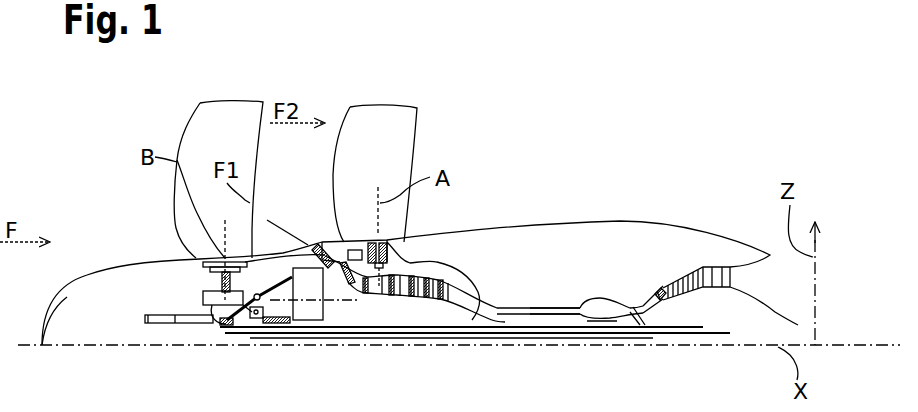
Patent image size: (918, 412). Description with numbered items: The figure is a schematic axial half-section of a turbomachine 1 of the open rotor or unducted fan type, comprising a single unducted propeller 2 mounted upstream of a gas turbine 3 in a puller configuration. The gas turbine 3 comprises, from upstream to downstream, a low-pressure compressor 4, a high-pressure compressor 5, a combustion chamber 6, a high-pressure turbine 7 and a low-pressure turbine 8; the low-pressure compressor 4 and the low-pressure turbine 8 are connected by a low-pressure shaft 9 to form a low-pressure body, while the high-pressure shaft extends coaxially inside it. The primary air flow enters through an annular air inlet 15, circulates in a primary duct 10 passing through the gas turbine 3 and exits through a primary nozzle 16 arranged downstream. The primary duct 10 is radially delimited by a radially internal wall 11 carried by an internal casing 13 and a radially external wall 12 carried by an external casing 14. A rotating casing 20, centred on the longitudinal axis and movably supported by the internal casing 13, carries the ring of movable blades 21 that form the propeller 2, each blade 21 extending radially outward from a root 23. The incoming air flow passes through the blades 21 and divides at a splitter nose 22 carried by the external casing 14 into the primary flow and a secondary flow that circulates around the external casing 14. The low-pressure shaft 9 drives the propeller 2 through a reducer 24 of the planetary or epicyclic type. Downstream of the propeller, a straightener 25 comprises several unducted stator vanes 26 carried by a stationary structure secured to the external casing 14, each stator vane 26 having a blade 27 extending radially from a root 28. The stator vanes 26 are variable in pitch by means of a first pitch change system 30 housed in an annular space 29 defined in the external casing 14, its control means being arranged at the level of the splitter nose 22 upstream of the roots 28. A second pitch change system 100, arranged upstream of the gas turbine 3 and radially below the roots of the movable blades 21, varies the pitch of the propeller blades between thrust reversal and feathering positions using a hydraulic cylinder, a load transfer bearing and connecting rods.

The turbomachine 1 is at (562, 152).
The unducted propeller 2 is at (163, 130).
The gas turbine 3 is at (533, 351).
The low-pressure compressor 4 is at (425, 275).
The high-pressure compressor 5 is at (543, 317).
The combustion chamber 6 is at (607, 310).
The high-pressure turbine 7 is at (627, 307).
The low-pressure turbine 8 is at (693, 290).
The low-pressure shaft 9 is at (398, 330).
The primary duct 10 is at (352, 280).
The radially internal wall 11 is at (368, 243).
The radially external wall 12 is at (342, 284).
The internal casing 13 is at (125, 320).
The external casing 14 is at (563, 242).
The annular air inlet 15 is at (317, 247).
The primary nozzle 16 is at (743, 254).
The rotating casing 20 is at (183, 253).
The movable blades 21 is at (220, 130).
The splitter nose 22 is at (332, 243).
The root 23 is at (212, 280).
The reducer 24 is at (268, 325).
The straightener 25 is at (437, 130).
The stator vanes 26 is at (388, 163).
The blade 27 is at (390, 127).
The root 28 is at (398, 248).
The annular space 29 is at (465, 278).
The first pitch change system 30 is at (424, 257).
The second pitch change system 100 is at (181, 334).